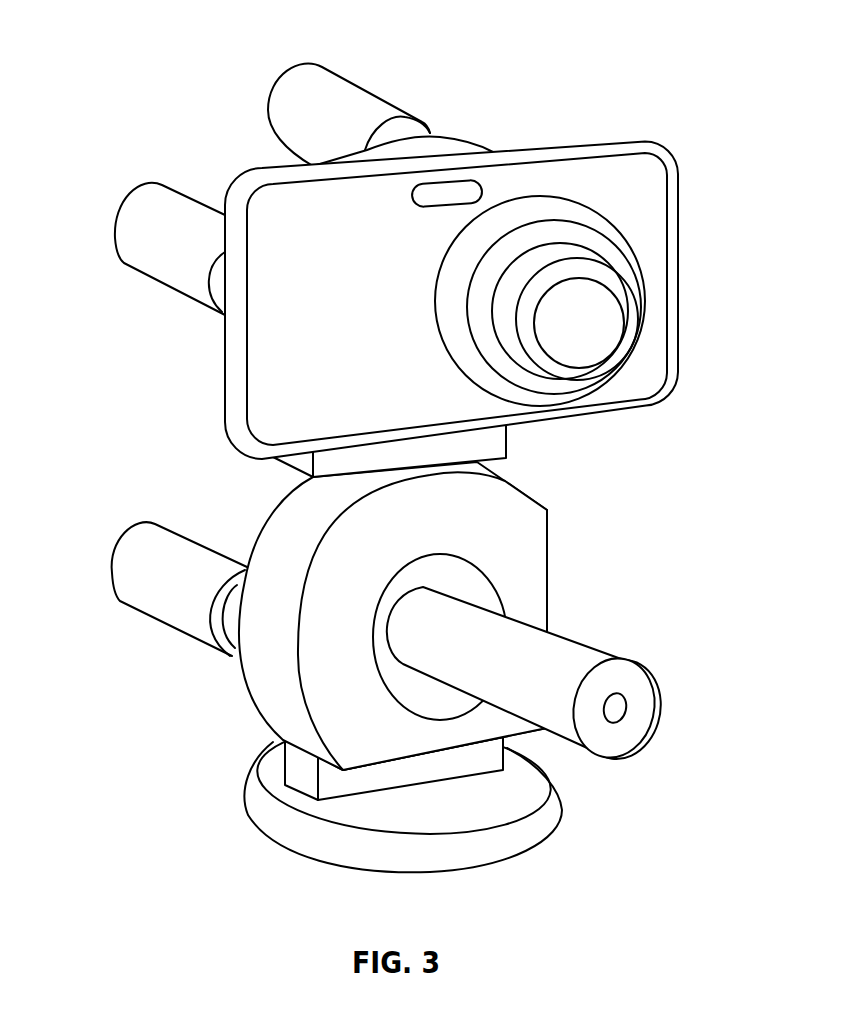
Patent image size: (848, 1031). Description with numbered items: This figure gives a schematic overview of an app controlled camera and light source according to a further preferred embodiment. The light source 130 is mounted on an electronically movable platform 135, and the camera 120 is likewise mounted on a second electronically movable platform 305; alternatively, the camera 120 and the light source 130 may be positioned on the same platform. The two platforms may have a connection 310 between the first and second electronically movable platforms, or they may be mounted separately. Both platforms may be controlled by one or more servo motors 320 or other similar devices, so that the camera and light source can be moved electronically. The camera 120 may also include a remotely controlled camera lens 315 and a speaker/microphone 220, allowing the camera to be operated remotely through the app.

The camera 120 is at (686, 240).
The light source 130 is at (656, 690).
The electronically movable platform 135 is at (244, 683).
The speaker/microphone 220 is at (483, 190).
The second electronically movable platform 305 is at (447, 137).
The connection 310 is at (508, 442).
The remotely controlled camera lens 315 is at (645, 338).
The servo motors 320 is at (341, 72).